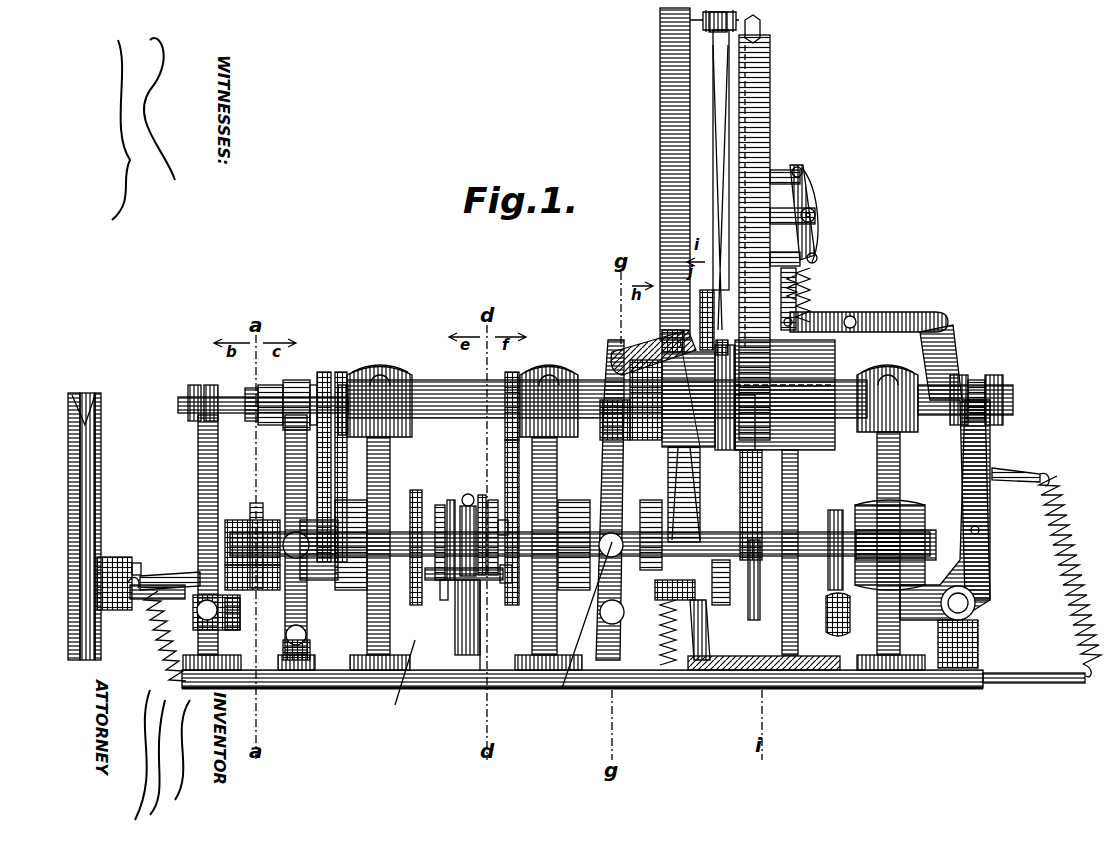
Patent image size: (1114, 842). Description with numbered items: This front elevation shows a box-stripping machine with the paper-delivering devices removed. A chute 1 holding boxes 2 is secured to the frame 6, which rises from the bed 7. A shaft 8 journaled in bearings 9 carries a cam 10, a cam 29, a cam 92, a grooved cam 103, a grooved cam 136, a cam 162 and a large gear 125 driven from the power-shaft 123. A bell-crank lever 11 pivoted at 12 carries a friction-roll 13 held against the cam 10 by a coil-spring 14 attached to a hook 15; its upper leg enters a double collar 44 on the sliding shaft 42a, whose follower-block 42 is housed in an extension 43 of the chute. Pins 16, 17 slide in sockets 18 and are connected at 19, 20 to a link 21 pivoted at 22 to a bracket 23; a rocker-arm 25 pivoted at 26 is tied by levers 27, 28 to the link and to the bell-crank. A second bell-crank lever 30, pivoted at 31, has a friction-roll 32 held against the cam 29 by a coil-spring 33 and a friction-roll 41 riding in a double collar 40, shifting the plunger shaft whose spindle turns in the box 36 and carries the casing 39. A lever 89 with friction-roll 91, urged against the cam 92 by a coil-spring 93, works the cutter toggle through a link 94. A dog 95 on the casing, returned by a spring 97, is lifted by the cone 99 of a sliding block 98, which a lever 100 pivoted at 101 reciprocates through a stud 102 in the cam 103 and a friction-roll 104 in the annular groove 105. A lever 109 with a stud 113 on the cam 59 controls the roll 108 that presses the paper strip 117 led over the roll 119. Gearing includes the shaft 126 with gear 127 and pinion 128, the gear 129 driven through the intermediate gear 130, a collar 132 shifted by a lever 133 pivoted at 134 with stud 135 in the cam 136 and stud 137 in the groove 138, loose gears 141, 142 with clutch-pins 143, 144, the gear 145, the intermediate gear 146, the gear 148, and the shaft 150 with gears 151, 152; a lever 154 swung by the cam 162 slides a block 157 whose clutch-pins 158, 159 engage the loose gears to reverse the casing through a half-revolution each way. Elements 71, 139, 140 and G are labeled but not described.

The chute 1 is at (770, 150).
The box 2 is at (725, 397).
The frame 6 is at (902, 495).
The bed 7 is at (672, 688).
The shaft 8 is at (936, 540).
The bearings 9 is at (928, 518).
The cam 10 is at (838, 522).
The bell-crank lever 11 is at (975, 560).
The pivot 12 is at (976, 606).
The friction-roll 13 is at (838, 625).
The coil-spring 14 is at (1062, 585).
The hook 15 is at (1025, 474).
The pin 16 is at (803, 170).
The pin 17 is at (800, 272).
The sockets 18 is at (785, 170).
The loose connection 19 is at (806, 180).
The loose connection 20 is at (818, 260).
The link 21 is at (818, 195).
The pivot 22 is at (816, 213).
The bracket 23 is at (815, 220).
The rocker-arm 25 is at (890, 318).
The pivot 26 is at (853, 316).
The lever 27 is at (810, 298).
The lever 28 is at (955, 445).
The cam 29 is at (255, 520).
The bell-crank lever 30 is at (198, 485).
The pivot 31 is at (214, 616).
The friction-roll 32 is at (240, 618).
The coil-spring 33 is at (156, 648).
The box 36 is at (390, 372).
The casing 39 is at (688, 399).
The double collar 40 is at (192, 387).
The friction-roll 41 is at (210, 387).
The follower-block 42 is at (737, 412).
The sliding shaft 42a is at (945, 405).
The extension of the chute 43 is at (785, 395).
The double collar 44 is at (1000, 390).
The cam 59 is at (764, 580).
The block 71 is at (724, 582).
The lever 89 is at (706, 605).
The friction-roll 91 is at (660, 600).
The cam 92 is at (651, 535).
The coil-spring 93 is at (660, 640).
The link 94 is at (672, 480).
The dog 95 is at (638, 352).
The spring 97 is at (668, 330).
The block 98 is at (728, 348).
The cone 99 is at (647, 400).
The lever 100 is at (668, 462).
The pivot 101 is at (583, 635).
The stud 102 is at (602, 555).
The cam 103 is at (602, 618).
The friction-roll 104 is at (606, 445).
The annular groove 105 is at (625, 440).
The roll 108 is at (714, 330).
The lever 109 is at (742, 470).
The stud 113 is at (790, 560).
The paper strip 117 is at (720, 90).
The roll 119 is at (740, 20).
The power-shaft 123 is at (140, 602).
The large gear 125 is at (318, 582).
The shaft 126 is at (440, 505).
The gear 127 is at (300, 530).
The pinion 128 is at (358, 525).
The gear 129 is at (346, 385).
The intermediate gear 130 is at (300, 440).
The collar 132 is at (268, 385).
The lever 133 is at (290, 455).
The pivot 134 is at (306, 640).
The stud 135 is at (230, 548).
The cam 136 is at (230, 528).
The stud 137 is at (322, 374).
The annular groove 138 is at (312, 385).
The gear 139 is at (341, 372).
The collar 140 is at (252, 421).
The loose gear 141 is at (415, 490).
The loose gear 142 is at (515, 520).
The clutch-pin 143 is at (445, 580).
The clutch-pin 144 is at (492, 500).
The gear 145 is at (510, 372).
The intermediate gear 146 is at (505, 450).
The gear 148 is at (505, 585).
The shaft 150 is at (480, 620).
The gear 151 is at (392, 683).
The gear 152 is at (512, 600).
The lever 154 is at (470, 525).
The block 157 is at (462, 600).
The clutch-pin 158 is at (448, 592).
The clutch-pin 159 is at (480, 495).
The cam 162 is at (450, 500).
The gear G is at (462, 545).